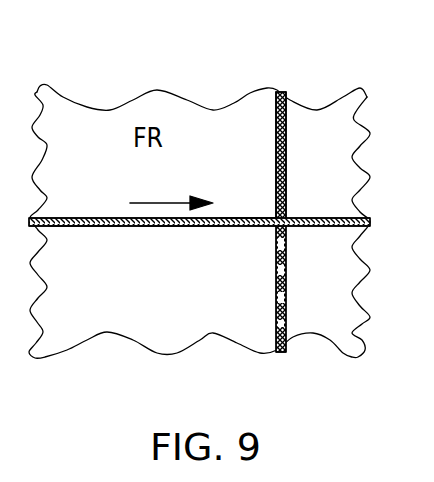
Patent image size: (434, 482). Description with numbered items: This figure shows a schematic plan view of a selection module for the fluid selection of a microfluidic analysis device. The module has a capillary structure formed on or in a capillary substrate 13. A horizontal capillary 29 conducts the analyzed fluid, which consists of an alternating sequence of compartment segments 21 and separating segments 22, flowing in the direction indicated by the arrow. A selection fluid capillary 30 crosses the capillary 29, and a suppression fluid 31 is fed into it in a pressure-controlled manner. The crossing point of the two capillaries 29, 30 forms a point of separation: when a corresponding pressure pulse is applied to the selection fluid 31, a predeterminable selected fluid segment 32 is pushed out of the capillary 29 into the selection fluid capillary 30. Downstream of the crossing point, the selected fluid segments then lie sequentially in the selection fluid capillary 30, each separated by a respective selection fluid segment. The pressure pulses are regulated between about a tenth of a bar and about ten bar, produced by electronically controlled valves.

The capillary substrate 13 is at (168, 115).
The compartment segments 21 is at (80, 227).
The separating segments 22 is at (93, 218).
The capillary 29 is at (250, 218).
The selection fluid capillary 30 is at (275, 133).
The suppression fluid 31 is at (280, 97).
The selected fluid segment 32 is at (177, 227).